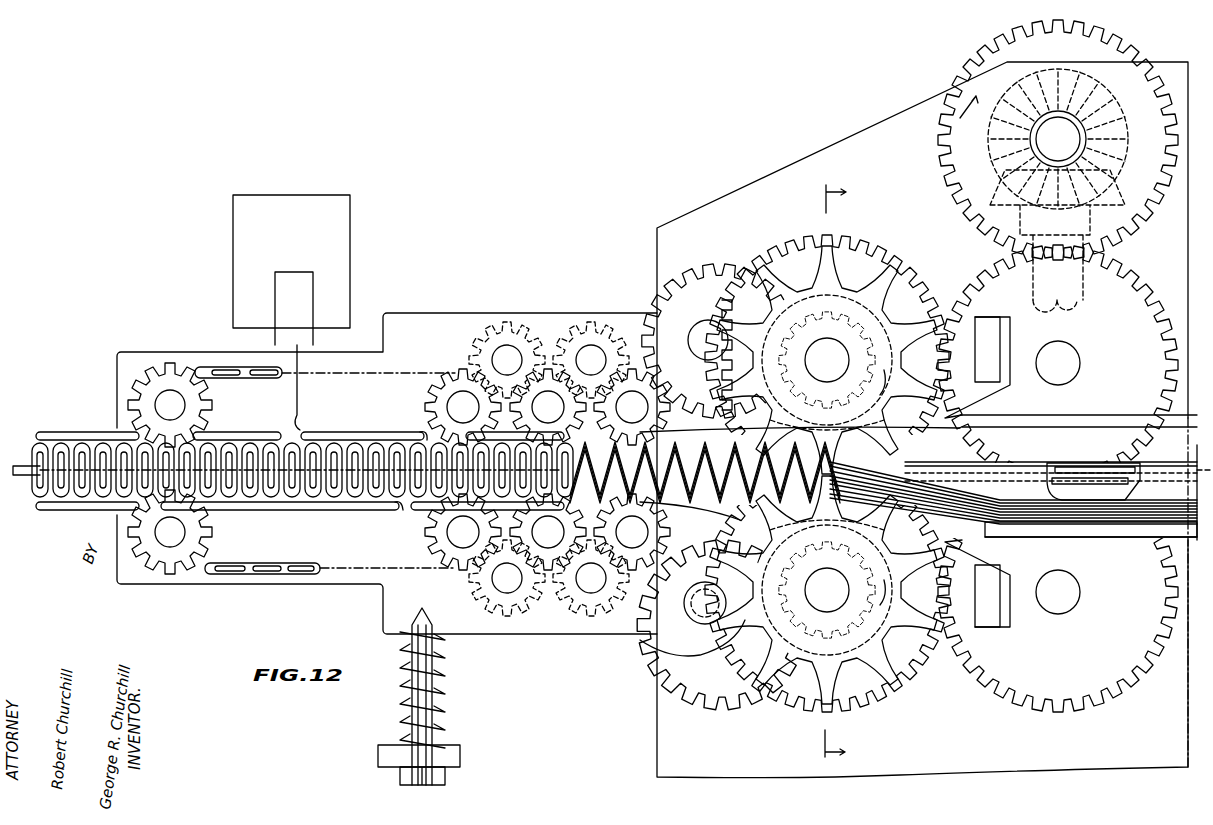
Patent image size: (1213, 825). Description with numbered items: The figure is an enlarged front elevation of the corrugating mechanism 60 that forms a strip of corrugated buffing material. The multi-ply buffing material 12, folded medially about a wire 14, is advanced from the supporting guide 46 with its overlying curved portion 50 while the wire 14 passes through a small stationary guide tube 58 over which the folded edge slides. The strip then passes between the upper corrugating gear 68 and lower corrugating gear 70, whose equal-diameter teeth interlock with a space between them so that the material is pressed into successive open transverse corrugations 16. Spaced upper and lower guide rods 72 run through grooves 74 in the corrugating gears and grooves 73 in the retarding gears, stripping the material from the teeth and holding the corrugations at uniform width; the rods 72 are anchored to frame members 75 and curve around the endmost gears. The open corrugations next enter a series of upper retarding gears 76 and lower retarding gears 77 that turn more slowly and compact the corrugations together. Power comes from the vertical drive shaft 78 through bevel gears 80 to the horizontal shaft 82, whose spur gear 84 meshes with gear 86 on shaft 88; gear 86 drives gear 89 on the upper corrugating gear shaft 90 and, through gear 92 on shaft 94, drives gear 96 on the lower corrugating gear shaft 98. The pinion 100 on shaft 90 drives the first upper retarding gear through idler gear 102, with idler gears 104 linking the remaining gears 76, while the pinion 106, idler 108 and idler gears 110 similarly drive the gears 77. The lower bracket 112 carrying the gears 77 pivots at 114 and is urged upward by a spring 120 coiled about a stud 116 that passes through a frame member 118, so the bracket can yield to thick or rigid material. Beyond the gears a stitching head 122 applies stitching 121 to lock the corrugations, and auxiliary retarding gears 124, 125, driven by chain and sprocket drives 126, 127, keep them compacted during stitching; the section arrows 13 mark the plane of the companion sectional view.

The buffing material 12 is at (1118, 538).
The section line 13- 13 is at (819, 471).
The wire 14 is at (26, 466).
The corrugations 16 is at (85, 500).
The supporting guide 46 is at (1148, 538).
The overlying curved portion 50 is at (1088, 414).
The stationary guide tube 58 is at (1072, 465).
The corrugating mechanism 60 is at (776, 226).
The upper corrugating gear 68 is at (874, 260).
The lower corrugating gear 70 is at (892, 672).
The guide rods 72 is at (812, 395).
The grooves 73 is at (422, 432).
The grooves 74 is at (836, 395).
The frame members 75 is at (985, 316).
The upper retarding gears 76 is at (445, 370).
The lower retarding gears 77 is at (435, 555).
The vertical drive shaft 78 is at (1080, 290).
The bevel gears 80 is at (1118, 194).
The horizontal shaft 82 is at (1077, 135).
The spur gear 84 is at (975, 52).
The gear 86 is at (1133, 275).
The shaft 88 is at (1080, 358).
The gear 89 is at (905, 282).
The upper corrugating gear shaft 90 is at (838, 350).
The gear 92 is at (1095, 700).
The shaft 94 is at (1068, 608).
The gear 96 is at (905, 668).
The lower corrugating gear shaft 98 is at (845, 590).
The pinion 100 is at (826, 296).
The idler gear 102 is at (693, 265).
The idler gears 104 is at (507, 322).
The pinion 106 is at (830, 630).
The idler 108 is at (692, 685).
The idler gears 110 is at (507, 618).
The lower bracket 112 is at (340, 588).
The pivot 114 is at (690, 620).
The stud 116 is at (402, 714).
The frame member 118 is at (462, 754).
The spring 120 is at (440, 700).
The stitching 121 is at (90, 428).
The stitching head 122 is at (358, 275).
The auxiliary retarding gear 124 is at (172, 364).
The auxiliary retarding gear 125 is at (170, 575).
The chain and sprocket drive 126 is at (220, 365).
The chain and sprocket drive 127 is at (268, 578).